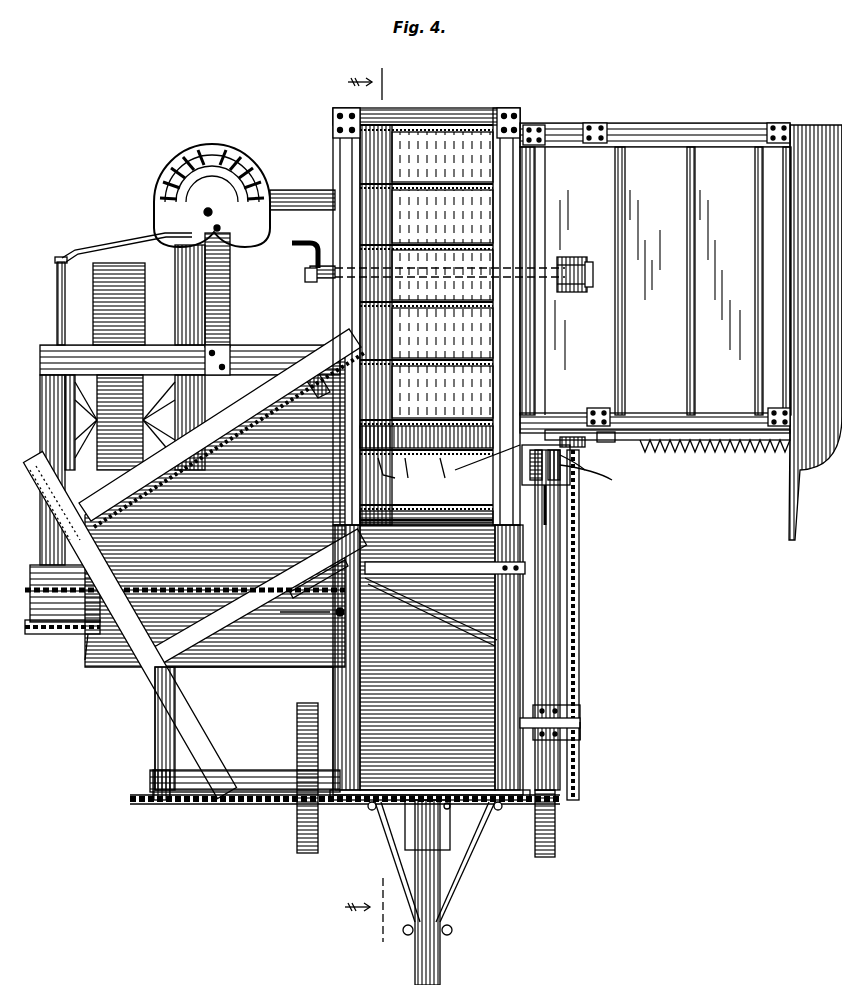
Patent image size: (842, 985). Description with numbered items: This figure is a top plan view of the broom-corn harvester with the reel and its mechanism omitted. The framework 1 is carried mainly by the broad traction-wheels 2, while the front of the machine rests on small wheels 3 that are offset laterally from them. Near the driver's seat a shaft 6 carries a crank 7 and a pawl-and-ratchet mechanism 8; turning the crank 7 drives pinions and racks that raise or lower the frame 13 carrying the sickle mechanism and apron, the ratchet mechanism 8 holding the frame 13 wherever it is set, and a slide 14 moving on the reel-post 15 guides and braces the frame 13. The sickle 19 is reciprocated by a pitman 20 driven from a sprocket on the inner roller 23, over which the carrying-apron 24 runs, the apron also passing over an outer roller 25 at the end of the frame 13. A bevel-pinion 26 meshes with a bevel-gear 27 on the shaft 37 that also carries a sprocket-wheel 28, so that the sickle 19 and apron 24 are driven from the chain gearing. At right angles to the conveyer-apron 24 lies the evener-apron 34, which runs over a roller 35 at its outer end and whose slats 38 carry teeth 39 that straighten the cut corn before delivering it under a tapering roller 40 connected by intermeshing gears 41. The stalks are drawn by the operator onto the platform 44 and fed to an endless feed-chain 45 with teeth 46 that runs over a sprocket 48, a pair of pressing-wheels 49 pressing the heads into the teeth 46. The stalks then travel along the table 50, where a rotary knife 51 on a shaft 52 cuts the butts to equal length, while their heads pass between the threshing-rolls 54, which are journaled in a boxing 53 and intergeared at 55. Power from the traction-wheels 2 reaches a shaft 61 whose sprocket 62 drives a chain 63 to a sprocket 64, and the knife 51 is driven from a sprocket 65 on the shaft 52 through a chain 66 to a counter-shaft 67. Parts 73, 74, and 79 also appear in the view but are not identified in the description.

The framework 1 is at (300, 190).
The traction-wheels 2 is at (158, 283).
The small wheels 3 is at (318, 850).
The shaft 6 is at (368, 268).
The crank 7 is at (303, 243).
The ratchet mechanism 8 is at (328, 282).
The frame 13 is at (800, 328).
The slide 14 is at (592, 455).
The reel-post 15 is at (562, 500).
The sickle 19 is at (724, 452).
The pitman 20 is at (628, 447).
The inner roller 23 is at (540, 290).
The carrying-apron 24 is at (647, 281).
The roller 25 is at (783, 232).
The bevel-pinion 26 is at (487, 461).
The bevel-gear 27 is at (525, 480).
The sprocket-wheel 28 is at (540, 505).
The evener-apron 34 is at (460, 215).
The roller 35 is at (432, 110).
The shaft 37 is at (570, 475).
The slats 38 is at (460, 145).
The teeth 39 is at (470, 320).
The tapering roller 40 is at (397, 471).
The intermeshing gears 41 is at (454, 478).
The platform 44 is at (430, 662).
The feed-chain 45 is at (305, 618).
The teeth 46 is at (256, 598).
The sprocket 48 is at (342, 622).
The pressing-wheels 49 is at (380, 612).
The table 50 is at (244, 728).
The rotary knife 51 is at (200, 668).
The shaft 52 is at (165, 732).
The boxing 53 is at (221, 428).
The threshing-rolls 54 is at (215, 503).
The intergearing 55 is at (310, 392).
The shaft 61 is at (580, 718).
The sprocket 62 is at (580, 740).
The chain 63 is at (580, 635).
The sprocket 64 is at (600, 478).
The sprocket 65 is at (160, 800).
The chain 66 is at (270, 805).
The counter-shaft 67 is at (378, 810).
The chain box 73 is at (55, 634).
The leg 74 is at (78, 659).
The bracket 79 is at (455, 808).